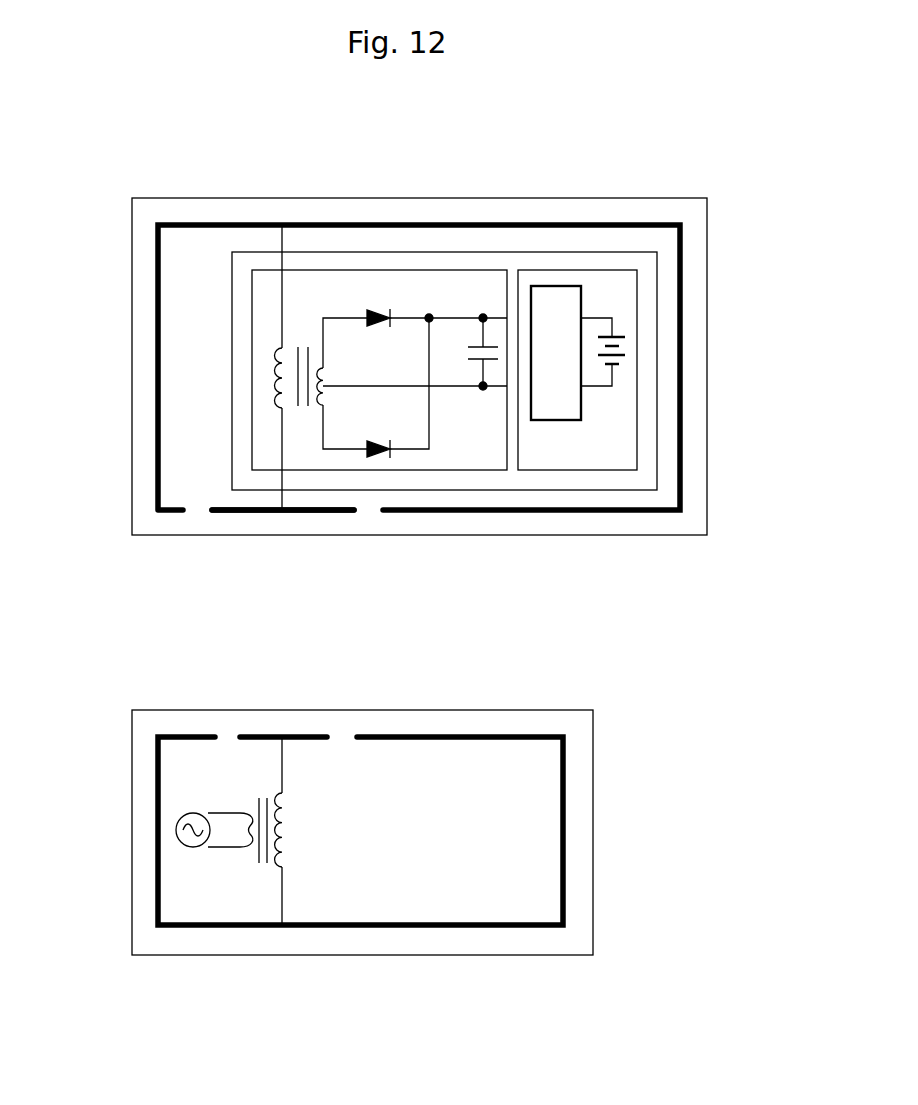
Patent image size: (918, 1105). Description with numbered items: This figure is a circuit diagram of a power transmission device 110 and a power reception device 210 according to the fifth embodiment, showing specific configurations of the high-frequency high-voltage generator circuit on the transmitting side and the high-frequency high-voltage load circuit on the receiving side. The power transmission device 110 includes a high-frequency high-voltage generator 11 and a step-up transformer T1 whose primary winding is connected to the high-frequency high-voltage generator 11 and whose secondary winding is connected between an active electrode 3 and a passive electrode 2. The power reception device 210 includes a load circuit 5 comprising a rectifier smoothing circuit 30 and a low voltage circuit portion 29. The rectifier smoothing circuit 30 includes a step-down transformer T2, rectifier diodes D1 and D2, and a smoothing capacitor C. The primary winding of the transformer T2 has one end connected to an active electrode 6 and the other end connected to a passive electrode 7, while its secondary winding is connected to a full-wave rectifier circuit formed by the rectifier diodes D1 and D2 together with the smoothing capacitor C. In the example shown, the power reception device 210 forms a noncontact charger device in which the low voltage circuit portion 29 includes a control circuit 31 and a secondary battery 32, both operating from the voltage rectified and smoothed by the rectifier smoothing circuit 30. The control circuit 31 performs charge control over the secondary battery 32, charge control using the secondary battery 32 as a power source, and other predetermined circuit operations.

The power reception device 210 is at (132, 362).
The passive electrode 7 is at (353, 225).
The active electrode 6 is at (313, 512).
The load circuit 5 is at (504, 313).
The rectifier smoothing circuit 30 is at (460, 252).
The low voltage circuit portion 29 is at (568, 270).
The control circuit 31 is at (548, 420).
The secondary battery 32 is at (625, 367).
The step-down transformer T2 is at (305, 333).
The rectifier diode D1 is at (382, 302).
The rectifier diode D2 is at (382, 429).
The smoothing capacitor C is at (468, 352).
The power transmission device 110 is at (132, 836).
The passive electrode 2 is at (405, 735).
The active electrode 3 is at (305, 737).
The step-up transformer T1 is at (262, 788).
The high-frequency high-voltage generator 11 is at (197, 813).